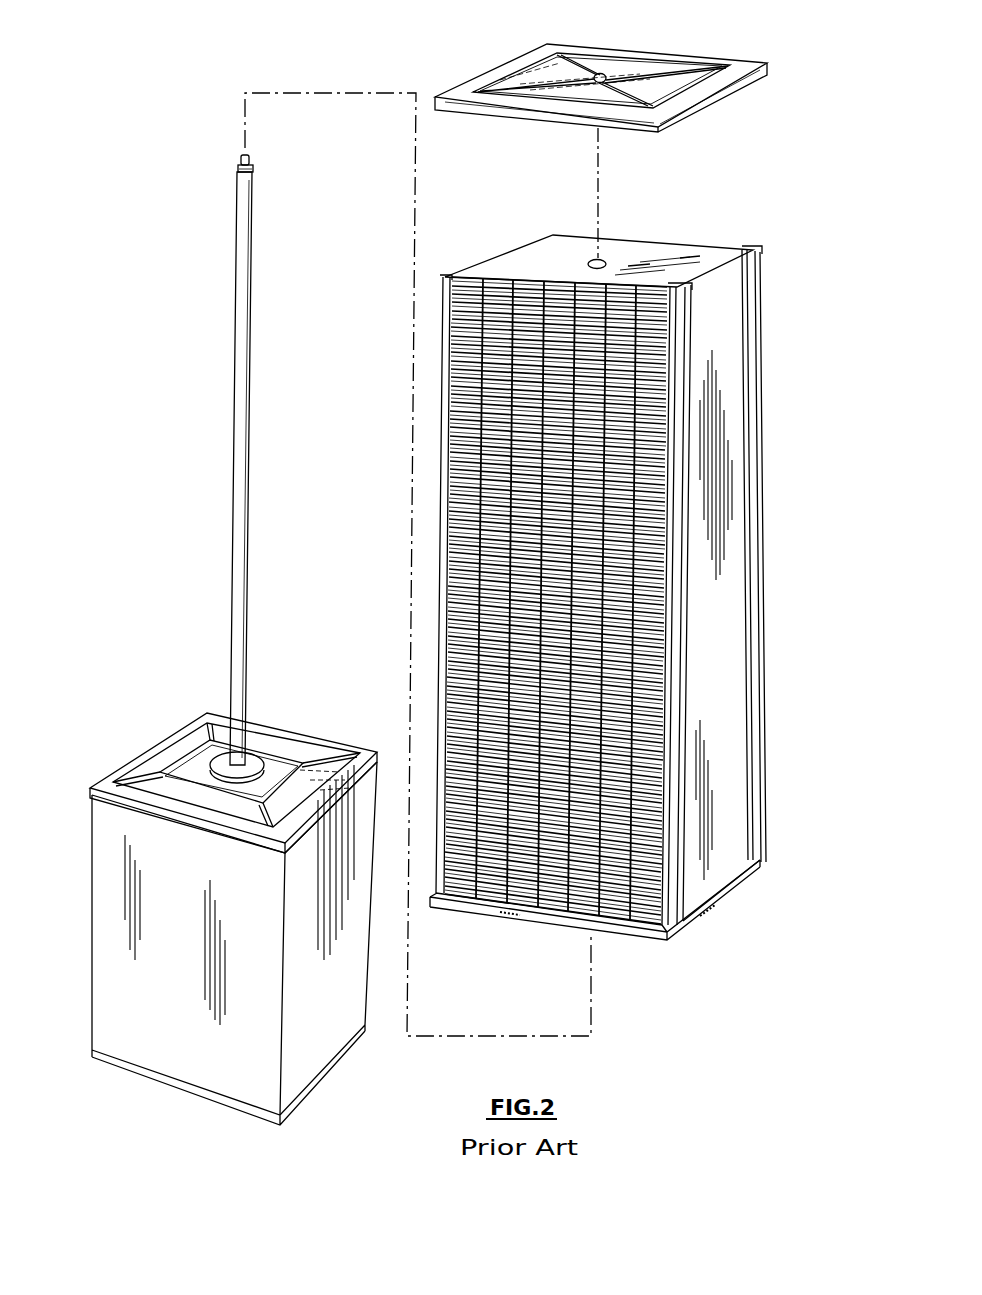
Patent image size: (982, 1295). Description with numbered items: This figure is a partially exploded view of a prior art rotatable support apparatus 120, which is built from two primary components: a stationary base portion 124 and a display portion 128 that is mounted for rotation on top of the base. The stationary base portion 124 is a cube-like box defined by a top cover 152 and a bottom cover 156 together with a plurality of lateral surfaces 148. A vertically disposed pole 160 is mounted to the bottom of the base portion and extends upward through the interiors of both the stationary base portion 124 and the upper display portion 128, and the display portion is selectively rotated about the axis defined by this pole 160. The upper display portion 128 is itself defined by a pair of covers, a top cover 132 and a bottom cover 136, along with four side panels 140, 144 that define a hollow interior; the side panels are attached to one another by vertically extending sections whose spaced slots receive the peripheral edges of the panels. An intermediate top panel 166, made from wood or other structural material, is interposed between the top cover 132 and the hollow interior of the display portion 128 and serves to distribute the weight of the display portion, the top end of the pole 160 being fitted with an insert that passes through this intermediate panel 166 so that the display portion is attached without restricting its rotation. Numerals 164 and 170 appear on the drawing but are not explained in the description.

The rotatable support apparatus 120 is at (172, 176).
The stationary base portion 124 is at (343, 1005).
The display portion 128 is at (770, 455).
The top cover 132 is at (722, 98).
The bottom cover 136 is at (702, 916).
The side panel 140 is at (470, 573).
The side panel 144 is at (720, 619).
The lateral surfaces 148 is at (91, 946).
The top cover 152 is at (142, 752).
The bottom cover 156 is at (113, 1072).
The pole 160 is at (235, 356).
The rod tip 164 is at (243, 143).
The intermediate top panel 166 is at (695, 262).
The hole 170 is at (603, 262).